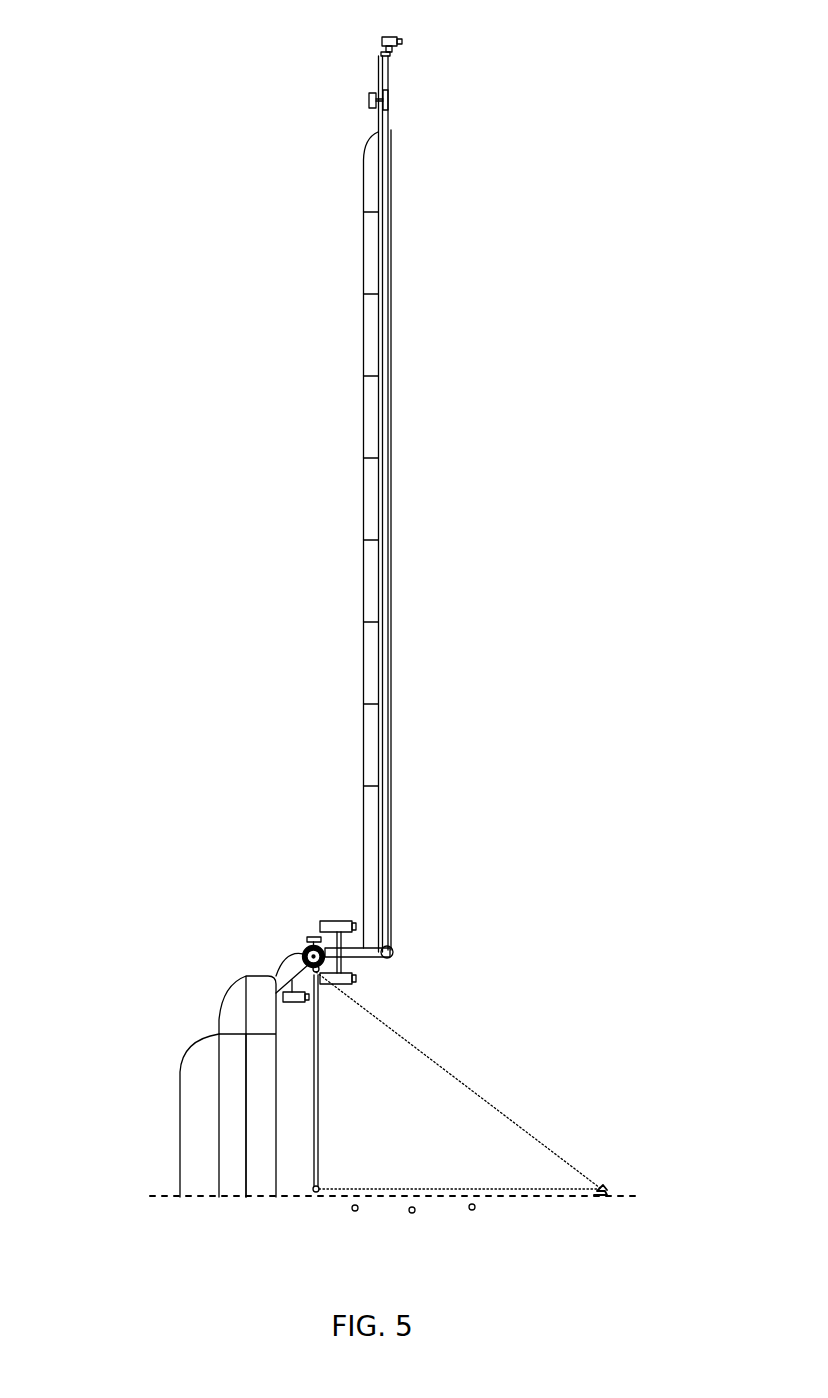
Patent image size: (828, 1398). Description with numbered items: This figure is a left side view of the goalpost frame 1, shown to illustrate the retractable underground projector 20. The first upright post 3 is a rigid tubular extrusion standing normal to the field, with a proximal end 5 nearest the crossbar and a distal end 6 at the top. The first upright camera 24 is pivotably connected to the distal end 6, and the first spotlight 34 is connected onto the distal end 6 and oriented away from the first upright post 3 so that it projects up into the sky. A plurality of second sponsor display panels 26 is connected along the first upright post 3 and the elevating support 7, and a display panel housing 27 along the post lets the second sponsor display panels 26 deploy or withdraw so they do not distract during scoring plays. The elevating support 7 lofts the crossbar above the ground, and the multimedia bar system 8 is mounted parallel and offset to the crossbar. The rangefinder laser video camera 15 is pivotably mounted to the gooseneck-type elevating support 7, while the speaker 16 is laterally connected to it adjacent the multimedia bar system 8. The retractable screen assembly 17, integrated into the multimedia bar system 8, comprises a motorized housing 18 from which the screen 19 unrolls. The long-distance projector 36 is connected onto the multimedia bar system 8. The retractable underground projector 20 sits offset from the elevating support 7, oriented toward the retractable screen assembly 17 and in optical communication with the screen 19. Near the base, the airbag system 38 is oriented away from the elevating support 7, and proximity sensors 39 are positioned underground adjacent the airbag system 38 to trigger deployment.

The goalpost frame 1 is at (276, 449).
The first upright post 3 is at (386, 340).
The proximal end 5 is at (401, 916).
The distal end 6 is at (404, 93).
The elevating support 7 is at (381, 963).
The multimedia bar system 8 is at (292, 938).
The rangefinder laser video camera 15 is at (337, 920).
The speaker 16 is at (235, 1000).
The retractable screen assembly 17 is at (325, 967).
The motorized housing 18 is at (268, 972).
The screen 19 is at (318, 1132).
The retractable underground projector 20 is at (603, 1186).
The first upright camera 24 is at (382, 42).
The second sponsor display panels 26 is at (372, 333).
The display panel housing 27 is at (380, 458).
The first spotlight 34 is at (371, 103).
The long-distance projector 36 is at (302, 998).
The airbag system 38 is at (253, 1095).
The proximity sensor 39 is at (354, 1209).